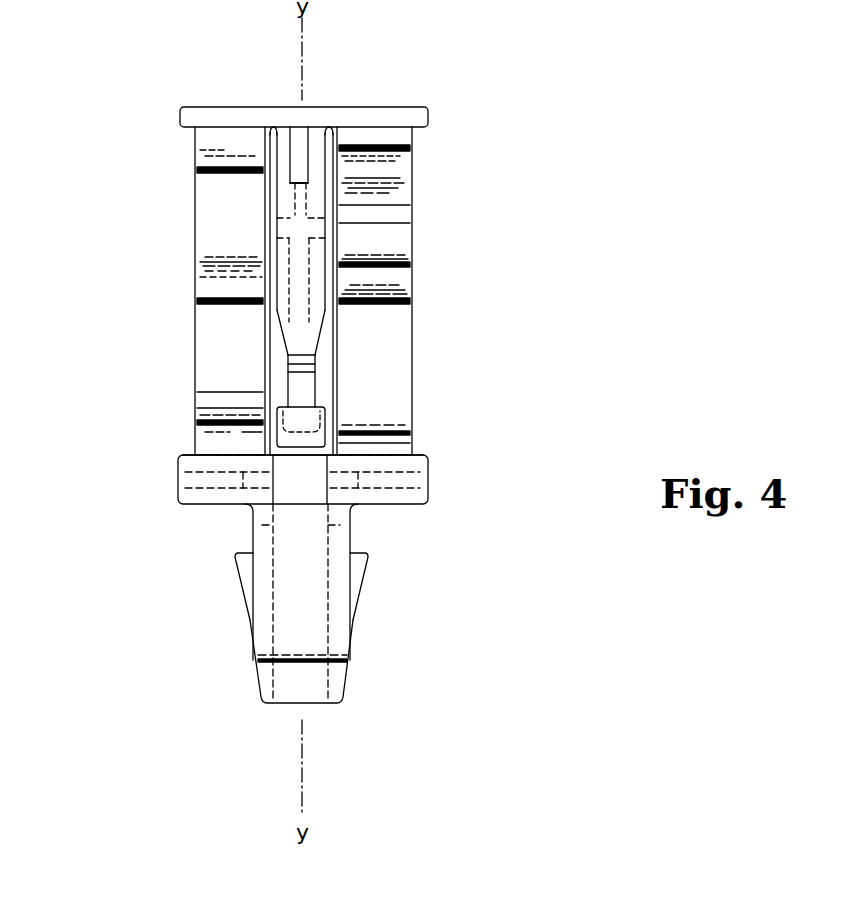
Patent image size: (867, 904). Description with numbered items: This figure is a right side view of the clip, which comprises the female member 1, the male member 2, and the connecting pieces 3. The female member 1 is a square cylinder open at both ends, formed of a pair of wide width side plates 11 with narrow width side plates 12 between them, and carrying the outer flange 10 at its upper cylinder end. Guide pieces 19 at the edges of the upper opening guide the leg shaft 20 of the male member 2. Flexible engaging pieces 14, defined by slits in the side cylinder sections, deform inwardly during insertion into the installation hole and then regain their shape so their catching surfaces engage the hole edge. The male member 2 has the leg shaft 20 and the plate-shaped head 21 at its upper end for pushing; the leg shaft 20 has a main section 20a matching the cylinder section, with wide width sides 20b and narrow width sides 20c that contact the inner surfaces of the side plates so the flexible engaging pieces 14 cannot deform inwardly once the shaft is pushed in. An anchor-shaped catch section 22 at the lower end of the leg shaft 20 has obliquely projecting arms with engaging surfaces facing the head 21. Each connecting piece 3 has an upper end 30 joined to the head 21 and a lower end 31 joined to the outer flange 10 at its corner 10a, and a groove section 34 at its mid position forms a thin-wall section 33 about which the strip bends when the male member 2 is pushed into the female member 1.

The female member 1 is at (309, 387).
The male member 2 is at (317, 287).
The connecting pieces 3 is at (207, 226).
The outer flange 10 is at (316, 490).
The corner of the outer flange 10a is at (182, 455).
The wide width side plates 11 is at (250, 618).
The narrow width side plates 12 is at (305, 625).
The flexible engaging pieces 14 is at (238, 578).
The guide pieces 19 is at (315, 438).
The leg shaft 20 is at (320, 270).
The main section 20a is at (322, 288).
The wide width sides 20b is at (290, 205).
The narrow width sides 20c is at (305, 196).
The head 21 is at (413, 108).
The anchor-shaped catch section 22 is at (290, 378).
The upper end of connecting piece 30 is at (222, 107).
The lower end of connecting piece 31 is at (233, 443).
The thin-wall section 33 is at (413, 300).
The groove section 34 is at (215, 287).